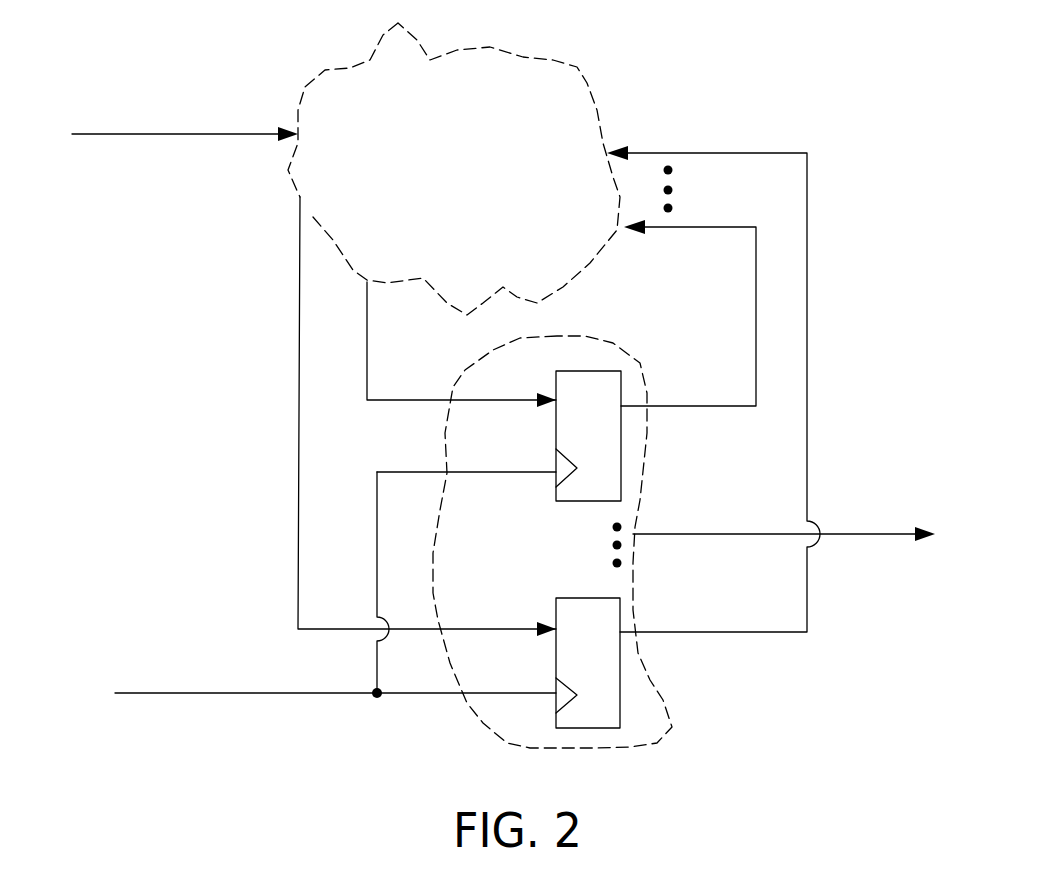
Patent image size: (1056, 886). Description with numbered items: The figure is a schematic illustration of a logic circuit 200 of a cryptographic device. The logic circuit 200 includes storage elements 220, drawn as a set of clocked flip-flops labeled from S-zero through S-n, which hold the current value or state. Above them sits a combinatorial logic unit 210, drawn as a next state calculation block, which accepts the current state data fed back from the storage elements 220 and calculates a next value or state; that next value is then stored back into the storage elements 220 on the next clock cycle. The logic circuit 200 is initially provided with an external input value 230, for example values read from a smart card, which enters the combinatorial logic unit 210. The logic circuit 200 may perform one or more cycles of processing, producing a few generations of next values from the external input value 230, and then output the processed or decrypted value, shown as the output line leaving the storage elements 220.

The logic circuit 200 is at (903, 272).
The combinatorial logic unit 210 is at (586, 80).
The storage elements 220 is at (483, 723).
The external input value 230 is at (130, 134).